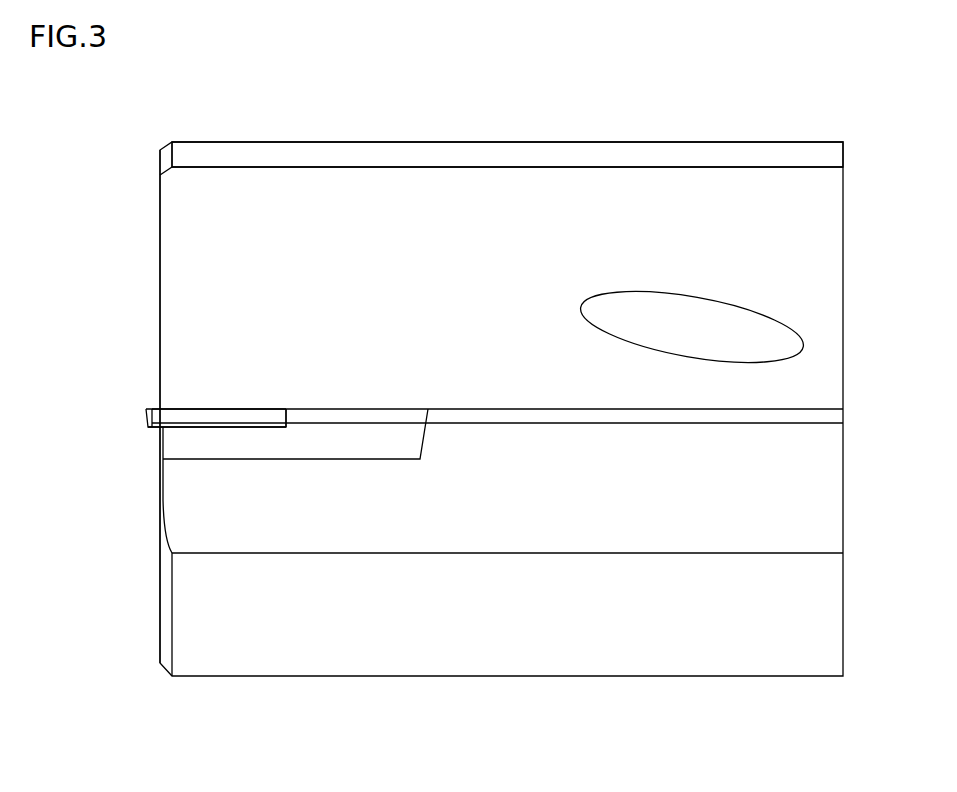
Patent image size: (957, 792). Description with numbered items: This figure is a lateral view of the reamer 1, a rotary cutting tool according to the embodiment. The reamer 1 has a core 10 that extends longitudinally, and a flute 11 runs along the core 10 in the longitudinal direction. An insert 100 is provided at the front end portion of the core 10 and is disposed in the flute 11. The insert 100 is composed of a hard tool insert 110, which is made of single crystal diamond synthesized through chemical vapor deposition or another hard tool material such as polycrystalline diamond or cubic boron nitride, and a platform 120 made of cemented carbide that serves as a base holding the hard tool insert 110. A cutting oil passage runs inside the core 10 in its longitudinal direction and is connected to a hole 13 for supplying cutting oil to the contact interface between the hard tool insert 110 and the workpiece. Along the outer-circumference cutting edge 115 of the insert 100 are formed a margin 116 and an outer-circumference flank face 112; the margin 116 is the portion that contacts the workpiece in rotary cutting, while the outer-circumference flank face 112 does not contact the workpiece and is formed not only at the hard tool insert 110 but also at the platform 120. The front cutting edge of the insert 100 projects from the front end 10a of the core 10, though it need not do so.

The reamer 1 is at (805, 104).
The core 10 is at (843, 297).
The front end 10a is at (160, 258).
The flute 11 is at (825, 245).
The hole 13 is at (690, 296).
The insert 100 is at (263, 498).
The hard tool insert 110 is at (122, 412).
The outer-circumference flank face 112 is at (187, 418).
The outer-circumference cutting edge 115 is at (193, 408).
The margin 116 is at (223, 412).
The platform 120 is at (385, 457).